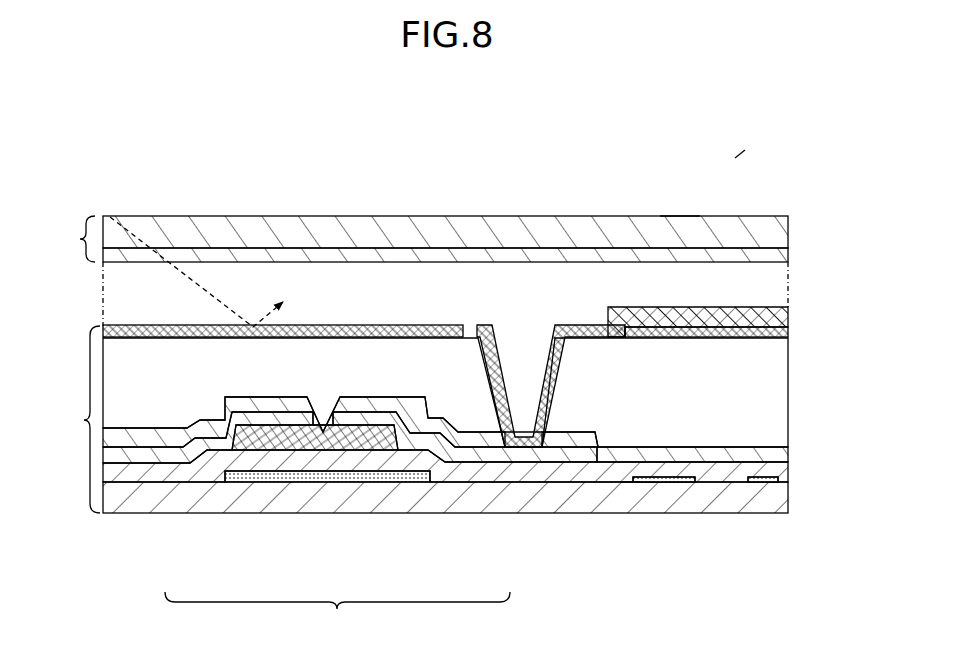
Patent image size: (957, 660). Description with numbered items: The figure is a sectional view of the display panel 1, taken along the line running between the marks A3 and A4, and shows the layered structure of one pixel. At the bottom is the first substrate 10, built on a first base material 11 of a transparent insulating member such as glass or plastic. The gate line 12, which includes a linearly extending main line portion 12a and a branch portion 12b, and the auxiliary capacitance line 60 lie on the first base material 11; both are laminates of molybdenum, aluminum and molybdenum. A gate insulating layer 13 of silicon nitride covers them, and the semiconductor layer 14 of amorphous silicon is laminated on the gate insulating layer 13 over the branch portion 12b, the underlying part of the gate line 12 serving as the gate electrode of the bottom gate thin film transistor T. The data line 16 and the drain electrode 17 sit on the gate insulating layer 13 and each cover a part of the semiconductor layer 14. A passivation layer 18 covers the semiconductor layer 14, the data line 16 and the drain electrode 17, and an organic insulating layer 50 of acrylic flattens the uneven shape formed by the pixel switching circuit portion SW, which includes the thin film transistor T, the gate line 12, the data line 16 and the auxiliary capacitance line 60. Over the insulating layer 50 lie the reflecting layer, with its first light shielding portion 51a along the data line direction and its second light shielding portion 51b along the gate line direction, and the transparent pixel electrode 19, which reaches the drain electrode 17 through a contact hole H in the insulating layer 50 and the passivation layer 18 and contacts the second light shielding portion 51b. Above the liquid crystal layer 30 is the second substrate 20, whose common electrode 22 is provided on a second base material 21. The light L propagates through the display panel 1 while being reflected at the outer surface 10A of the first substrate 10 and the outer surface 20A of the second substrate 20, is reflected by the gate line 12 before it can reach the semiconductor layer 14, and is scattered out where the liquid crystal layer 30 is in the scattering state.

The display panel 1 is at (737, 156).
The first substrate 10 is at (454, 395).
The outer surface of the first substrate 10A is at (627, 483).
The first base material 11 is at (775, 497).
The gate line 12 is at (471, 529).
The main line portion 12a is at (680, 481).
The branch portion 12b is at (300, 480).
The gate insulating layer 13 is at (560, 470).
The semiconductor layer 14 is at (365, 435).
The data line 16 is at (195, 455).
The drain electrode 17 is at (470, 452).
The passivation layer 18 is at (790, 452).
The pixel electrode 19 is at (790, 315).
The second substrate 20 is at (446, 244).
The outer surface of the second substrate 20A is at (680, 214).
The second base material 21 is at (790, 229).
The common electrode 22 is at (790, 257).
The liquid crystal layer 30 is at (125, 297).
The insulating layer 50 is at (775, 405).
The first light shielding portion 51a is at (148, 330).
The second light shielding portion 51b is at (790, 335).
The auxiliary capacitance line 60 is at (758, 481).
The light L is at (191, 272).
The thin film transistor T is at (385, 370).
The contact hole H is at (537, 338).
The pixel switching circuit portion SW is at (337, 614).
The section line end A3 is at (88, 192).
The section line end A4 is at (800, 192).